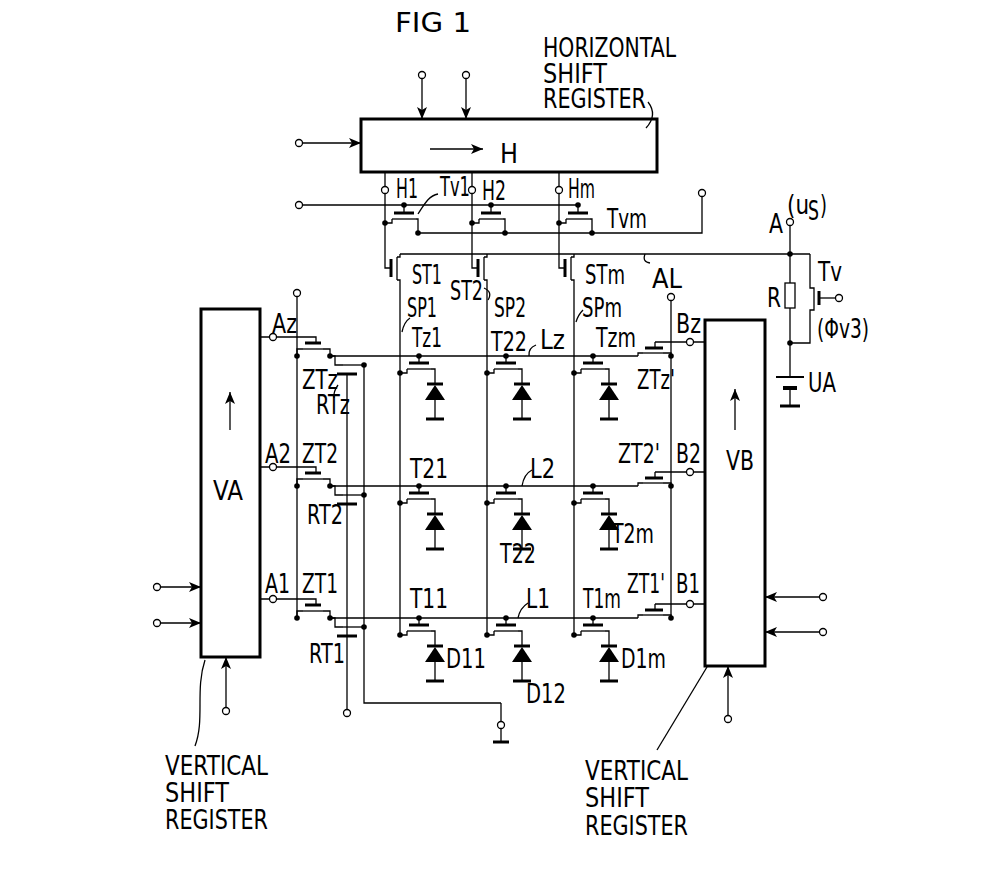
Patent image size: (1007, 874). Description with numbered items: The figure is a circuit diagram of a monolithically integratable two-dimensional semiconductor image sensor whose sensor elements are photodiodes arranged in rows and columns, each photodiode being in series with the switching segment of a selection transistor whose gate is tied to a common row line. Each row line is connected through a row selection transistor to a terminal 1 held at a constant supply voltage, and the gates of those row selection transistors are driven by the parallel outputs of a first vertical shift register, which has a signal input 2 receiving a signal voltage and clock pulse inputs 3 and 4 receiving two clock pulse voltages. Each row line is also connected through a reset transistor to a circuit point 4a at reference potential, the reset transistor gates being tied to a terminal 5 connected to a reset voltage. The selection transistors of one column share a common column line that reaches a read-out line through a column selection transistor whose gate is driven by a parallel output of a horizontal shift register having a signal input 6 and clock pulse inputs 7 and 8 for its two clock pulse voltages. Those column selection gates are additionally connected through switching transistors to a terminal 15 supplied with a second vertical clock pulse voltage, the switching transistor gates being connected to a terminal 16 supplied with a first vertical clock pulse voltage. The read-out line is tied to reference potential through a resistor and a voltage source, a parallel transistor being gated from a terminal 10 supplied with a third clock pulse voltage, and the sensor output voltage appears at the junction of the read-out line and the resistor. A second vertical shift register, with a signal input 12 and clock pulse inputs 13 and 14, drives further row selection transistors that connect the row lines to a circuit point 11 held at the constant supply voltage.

The terminal 1 is at (279, 437).
The signal input 2 is at (255, 695).
The clock pulse input 3 is at (170, 587).
The clock pulse input 4 is at (170, 625).
The circuit point 4a is at (518, 722).
The terminal 5 is at (336, 559).
The signal input 6 is at (297, 144).
The clock pulse input 7 is at (418, 81).
The clock pulse input 8 is at (465, 81).
The terminal 10 is at (844, 298).
The circuit point 11 is at (682, 286).
The signal input 12 is at (751, 718).
The clock pulse input 13 is at (801, 577).
The clock pulse input 14 is at (809, 634).
The terminal 15 is at (589, 197).
The terminal 16 is at (424, 223).